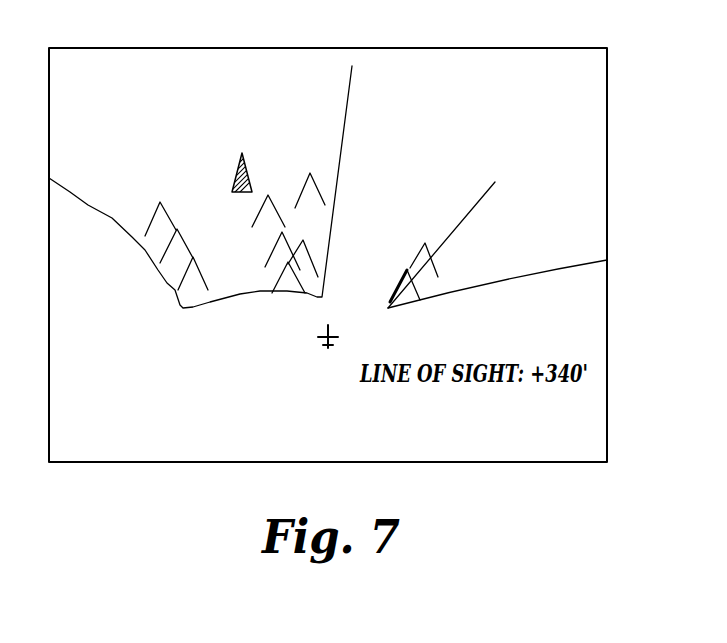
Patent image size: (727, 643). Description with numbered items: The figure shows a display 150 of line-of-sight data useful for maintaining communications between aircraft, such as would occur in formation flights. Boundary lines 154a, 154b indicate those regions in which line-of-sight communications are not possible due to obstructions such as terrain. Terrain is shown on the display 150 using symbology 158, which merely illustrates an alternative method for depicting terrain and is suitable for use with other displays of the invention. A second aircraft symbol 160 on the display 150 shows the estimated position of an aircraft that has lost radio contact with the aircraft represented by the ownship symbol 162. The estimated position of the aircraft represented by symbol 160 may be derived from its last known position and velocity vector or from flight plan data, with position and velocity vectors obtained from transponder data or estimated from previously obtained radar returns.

The display 150 is at (337, 48).
The boundary line 154a is at (143, 250).
The boundary line 154b is at (442, 295).
The symbology 158 is at (168, 214).
The second aircraft symbol 160 is at (249, 171).
The ownship symbol 162 is at (330, 331).